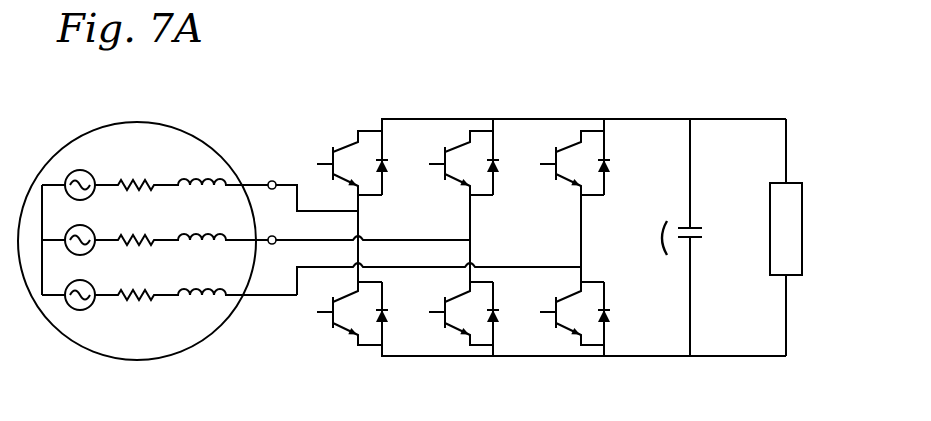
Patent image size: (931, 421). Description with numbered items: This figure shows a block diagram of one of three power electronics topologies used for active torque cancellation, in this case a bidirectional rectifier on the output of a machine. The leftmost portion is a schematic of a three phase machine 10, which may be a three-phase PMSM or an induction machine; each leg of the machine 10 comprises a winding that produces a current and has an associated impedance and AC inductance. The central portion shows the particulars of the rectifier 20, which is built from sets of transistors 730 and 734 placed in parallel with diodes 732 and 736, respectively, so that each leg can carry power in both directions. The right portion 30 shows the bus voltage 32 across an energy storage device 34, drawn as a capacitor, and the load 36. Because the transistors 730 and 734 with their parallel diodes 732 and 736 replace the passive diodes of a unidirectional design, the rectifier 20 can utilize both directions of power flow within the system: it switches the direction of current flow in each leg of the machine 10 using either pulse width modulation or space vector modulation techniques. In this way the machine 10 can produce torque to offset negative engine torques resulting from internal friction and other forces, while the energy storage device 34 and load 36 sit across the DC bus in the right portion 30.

The 3 phase machine 10 is at (194, 132).
The rectifier 20 is at (650, 105).
The right portion 30 is at (792, 103).
The bus voltage Vdc 32 is at (665, 252).
The energy storage device 34 is at (697, 241).
The load 36 is at (778, 276).
The transistors 730 is at (333, 152).
The diodes 732 is at (383, 162).
The transistors 734 is at (333, 324).
The diodes 736 is at (384, 312).